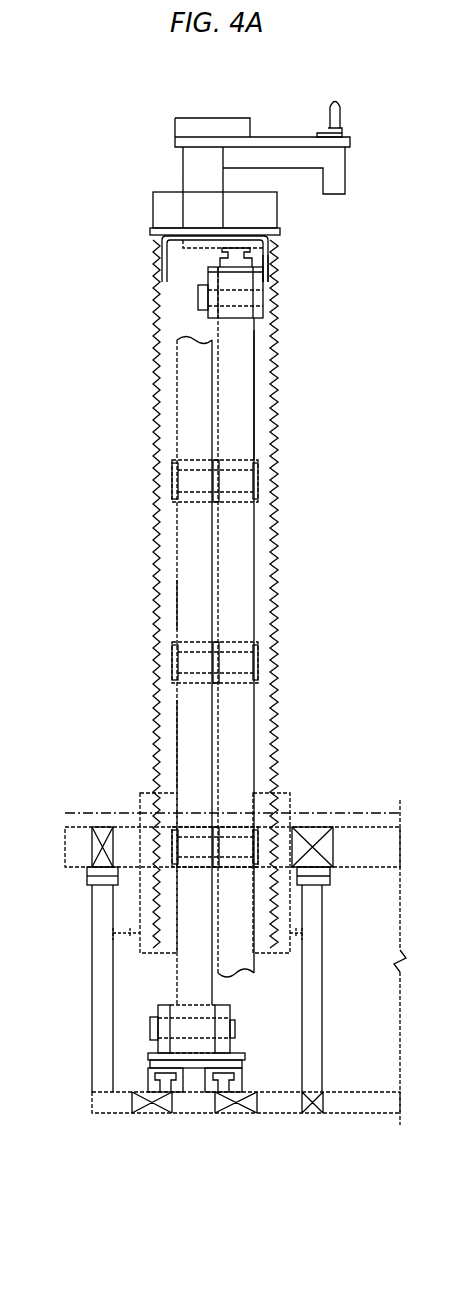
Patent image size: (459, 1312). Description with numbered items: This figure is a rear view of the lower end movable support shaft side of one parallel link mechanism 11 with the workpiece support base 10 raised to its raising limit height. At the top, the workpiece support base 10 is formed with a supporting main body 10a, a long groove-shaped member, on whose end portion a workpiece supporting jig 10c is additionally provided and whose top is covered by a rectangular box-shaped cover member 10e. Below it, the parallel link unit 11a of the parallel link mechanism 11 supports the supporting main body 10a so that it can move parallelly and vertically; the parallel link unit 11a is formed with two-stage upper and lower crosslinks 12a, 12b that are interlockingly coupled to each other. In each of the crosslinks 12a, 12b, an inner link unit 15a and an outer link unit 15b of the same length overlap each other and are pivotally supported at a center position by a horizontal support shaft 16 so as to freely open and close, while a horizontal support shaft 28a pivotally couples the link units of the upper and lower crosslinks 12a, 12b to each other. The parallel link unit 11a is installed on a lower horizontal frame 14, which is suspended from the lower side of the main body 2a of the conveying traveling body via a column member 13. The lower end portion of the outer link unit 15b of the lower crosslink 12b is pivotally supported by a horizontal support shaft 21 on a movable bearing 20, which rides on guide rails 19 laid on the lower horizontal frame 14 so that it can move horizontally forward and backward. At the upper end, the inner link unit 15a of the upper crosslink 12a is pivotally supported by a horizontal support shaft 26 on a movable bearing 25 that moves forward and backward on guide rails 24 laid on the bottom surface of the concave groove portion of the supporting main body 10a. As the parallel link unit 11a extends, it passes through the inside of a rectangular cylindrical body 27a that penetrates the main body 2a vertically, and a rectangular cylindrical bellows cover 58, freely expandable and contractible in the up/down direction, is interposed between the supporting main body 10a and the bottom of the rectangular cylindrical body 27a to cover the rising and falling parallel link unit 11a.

The main body 2a is at (355, 827).
The workpiece support base 10 is at (155, 262).
The supporting main body 10a is at (268, 258).
The workpiece supporting jig 10c is at (289, 140).
The cover member 10e is at (153, 208).
The parallel link mechanism 11 is at (176, 558).
The parallel link unit 11a is at (176, 606).
The upper crosslink 12a is at (256, 388).
The lower crosslink 12b is at (176, 737).
The column member 13 is at (320, 985).
The lower horizontal frame 14 is at (200, 1113).
The inner link unit 15a is at (245, 420).
The outer link unit 15b is at (190, 415).
The horizontal support shaft 16 is at (258, 478).
The guide rail 19 is at (165, 1093).
The movable bearing 20 is at (195, 1010).
The horizontal support shaft 21 is at (233, 1028).
The guide rail 24 is at (231, 250).
The movable bearing 25 is at (262, 295).
The horizontal support shaft 26 is at (230, 303).
The rectangular cylindrical body 27a is at (290, 905).
The horizontal support shaft 28a is at (172, 660).
The bellows cover 58 is at (275, 558).